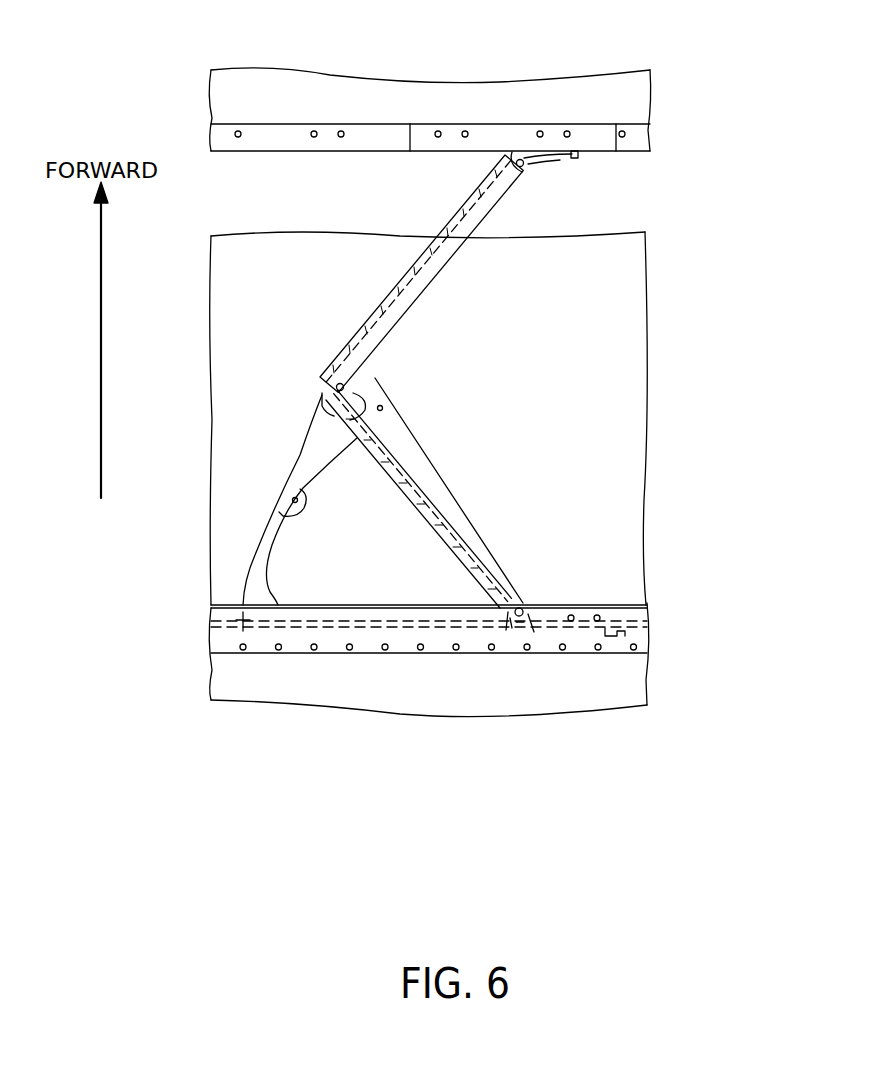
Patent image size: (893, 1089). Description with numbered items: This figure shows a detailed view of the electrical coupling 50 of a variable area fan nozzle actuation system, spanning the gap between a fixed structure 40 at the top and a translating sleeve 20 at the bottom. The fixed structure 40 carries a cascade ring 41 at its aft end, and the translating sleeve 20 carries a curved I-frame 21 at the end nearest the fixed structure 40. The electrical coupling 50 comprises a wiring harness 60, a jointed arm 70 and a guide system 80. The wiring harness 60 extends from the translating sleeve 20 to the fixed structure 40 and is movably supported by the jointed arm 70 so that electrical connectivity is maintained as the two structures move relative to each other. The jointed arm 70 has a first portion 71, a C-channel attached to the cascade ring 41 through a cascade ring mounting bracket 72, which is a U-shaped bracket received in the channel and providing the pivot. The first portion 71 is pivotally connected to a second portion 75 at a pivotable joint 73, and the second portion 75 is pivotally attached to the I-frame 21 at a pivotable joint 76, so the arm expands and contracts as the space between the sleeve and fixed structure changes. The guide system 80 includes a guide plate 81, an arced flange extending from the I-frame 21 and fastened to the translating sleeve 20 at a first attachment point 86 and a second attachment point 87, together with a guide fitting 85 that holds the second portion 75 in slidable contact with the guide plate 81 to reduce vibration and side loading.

The translating sleeve 20 is at (732, 603).
The I-frame 21 is at (635, 633).
The fixed structure 40 is at (754, 63).
The cascade ring 41 is at (637, 138).
The electrical coupling 50 is at (741, 178).
The wiring harness 60 is at (528, 160).
The jointed arm 70 is at (479, 319).
The first portion 71 is at (378, 332).
The cascade ring mounting bracket 72 is at (528, 165).
The pivotable joint 73 is at (345, 385).
The second portion 75 is at (392, 448).
The pivotable joint 76 is at (523, 603).
The guide system 80 is at (311, 499).
The guide plate 81 is at (300, 452).
The guide fitting 85 is at (440, 488).
The first attachment point 86 is at (292, 502).
The second attachment point 87 is at (378, 408).